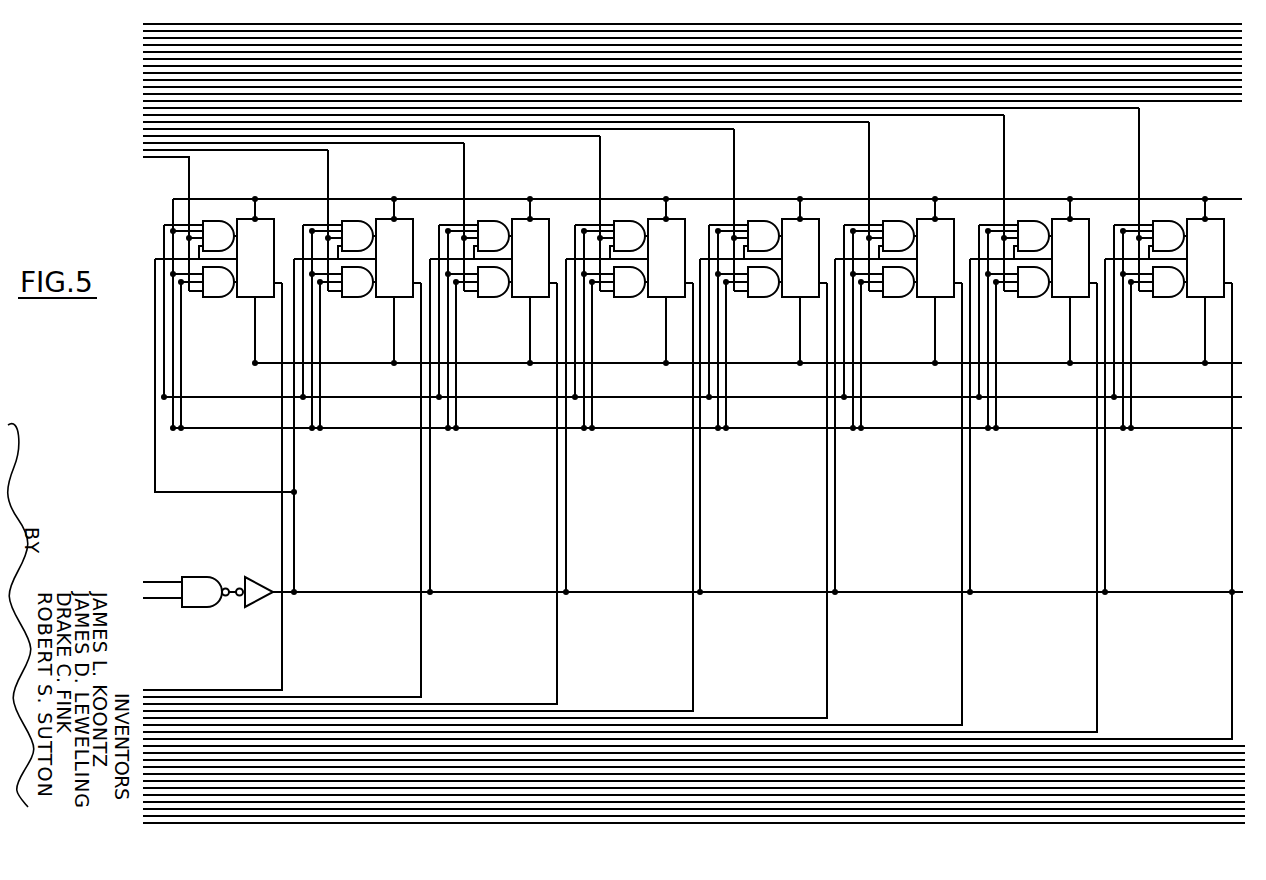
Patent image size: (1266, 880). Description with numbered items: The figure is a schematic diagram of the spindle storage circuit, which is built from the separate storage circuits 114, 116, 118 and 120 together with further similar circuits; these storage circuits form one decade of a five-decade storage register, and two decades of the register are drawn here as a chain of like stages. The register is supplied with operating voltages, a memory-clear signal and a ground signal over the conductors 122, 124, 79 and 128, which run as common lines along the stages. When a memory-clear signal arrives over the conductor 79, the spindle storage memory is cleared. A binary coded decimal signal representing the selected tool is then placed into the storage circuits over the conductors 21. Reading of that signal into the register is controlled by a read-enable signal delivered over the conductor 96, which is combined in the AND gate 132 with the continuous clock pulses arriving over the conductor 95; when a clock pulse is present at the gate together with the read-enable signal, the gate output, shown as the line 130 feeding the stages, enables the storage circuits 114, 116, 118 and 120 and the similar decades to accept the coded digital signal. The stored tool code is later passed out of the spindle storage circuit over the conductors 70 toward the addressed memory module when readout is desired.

The conductors 21 is at (171, 161).
The storage circuit 114 is at (256, 218).
The storage circuit 116 is at (395, 218).
The storage circuit 118 is at (531, 218).
The storage circuit 120 is at (667, 218).
The conductor 122 is at (1207, 218).
The conductor 79 is at (1218, 366).
The conductor 128 is at (1219, 399).
The conductor 124 is at (1221, 430).
The clock line 130 is at (296, 518).
The AND gate 132 is at (207, 577).
The conductor 95 is at (162, 582).
The conductor 96 is at (168, 600).
The conductors 70 is at (246, 824).